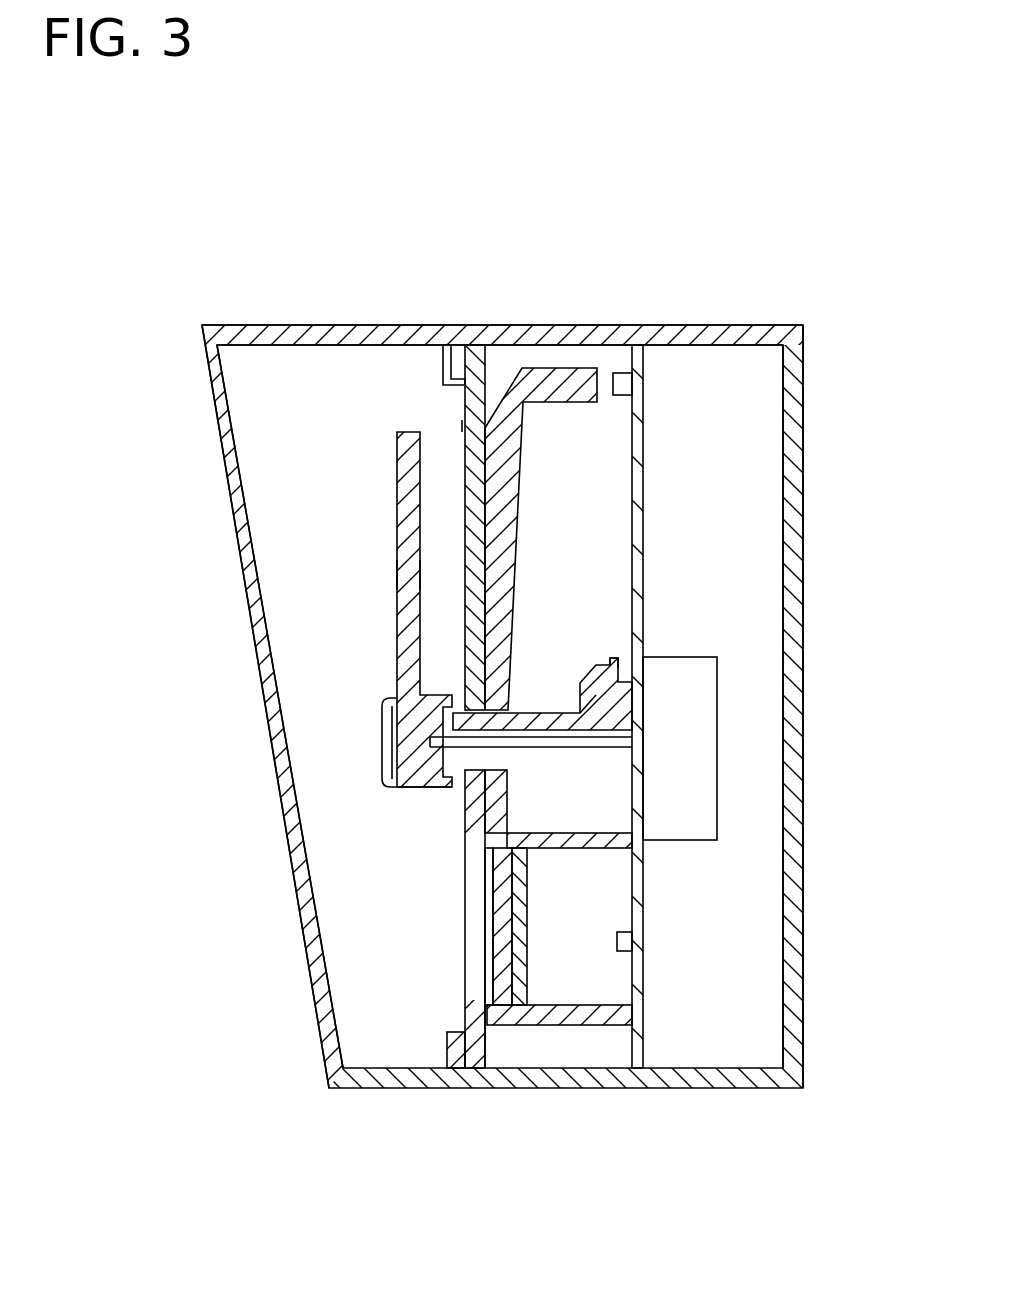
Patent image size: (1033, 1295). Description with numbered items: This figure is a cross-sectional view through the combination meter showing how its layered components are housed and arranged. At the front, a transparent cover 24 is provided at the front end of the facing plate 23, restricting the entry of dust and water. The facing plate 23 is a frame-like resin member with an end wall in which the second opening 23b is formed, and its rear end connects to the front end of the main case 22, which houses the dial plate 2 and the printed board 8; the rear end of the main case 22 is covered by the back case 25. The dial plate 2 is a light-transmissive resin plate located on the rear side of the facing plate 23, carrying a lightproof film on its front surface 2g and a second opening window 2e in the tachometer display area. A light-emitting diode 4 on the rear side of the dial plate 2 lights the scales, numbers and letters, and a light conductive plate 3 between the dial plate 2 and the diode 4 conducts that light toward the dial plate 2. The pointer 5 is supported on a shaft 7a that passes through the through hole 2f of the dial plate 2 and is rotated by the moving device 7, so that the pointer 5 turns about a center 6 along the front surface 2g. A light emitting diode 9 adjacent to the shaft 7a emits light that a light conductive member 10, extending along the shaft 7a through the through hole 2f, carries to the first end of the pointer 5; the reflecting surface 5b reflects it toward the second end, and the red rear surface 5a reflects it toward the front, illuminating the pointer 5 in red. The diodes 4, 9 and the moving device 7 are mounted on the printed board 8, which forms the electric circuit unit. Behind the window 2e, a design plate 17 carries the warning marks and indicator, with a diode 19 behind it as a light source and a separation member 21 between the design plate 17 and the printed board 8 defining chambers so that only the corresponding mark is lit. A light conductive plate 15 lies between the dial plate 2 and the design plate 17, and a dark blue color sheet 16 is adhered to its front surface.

The dial plate 2 is at (464, 435).
The second opening window 2e is at (466, 843).
The through hole 2f is at (466, 768).
The front surface 2g is at (465, 425).
The light conductive plate 3 is at (560, 368).
The light-emitting diode 4 is at (620, 373).
The pointer 5 is at (397, 641).
The rear surface 5a is at (425, 584).
The reflecting surface 5b is at (413, 746).
The center 6 is at (397, 753).
The moving device 7 is at (699, 657).
The shaft 7a is at (637, 715).
The printed board 8 is at (643, 457).
The light emitting diode 9 is at (643, 640).
The light conductive member 10 is at (603, 662).
The light conductive plate 15 is at (528, 893).
The color sheet 16 is at (483, 915).
The design plate 17 is at (530, 882).
The diode 19 is at (632, 919).
The separation member 21 is at (605, 1005).
The main case 22 is at (509, 325).
The facing plate 23 is at (249, 326).
The second opening 23b is at (462, 389).
The transparent cover 24 is at (213, 400).
The back case 25 is at (764, 325).